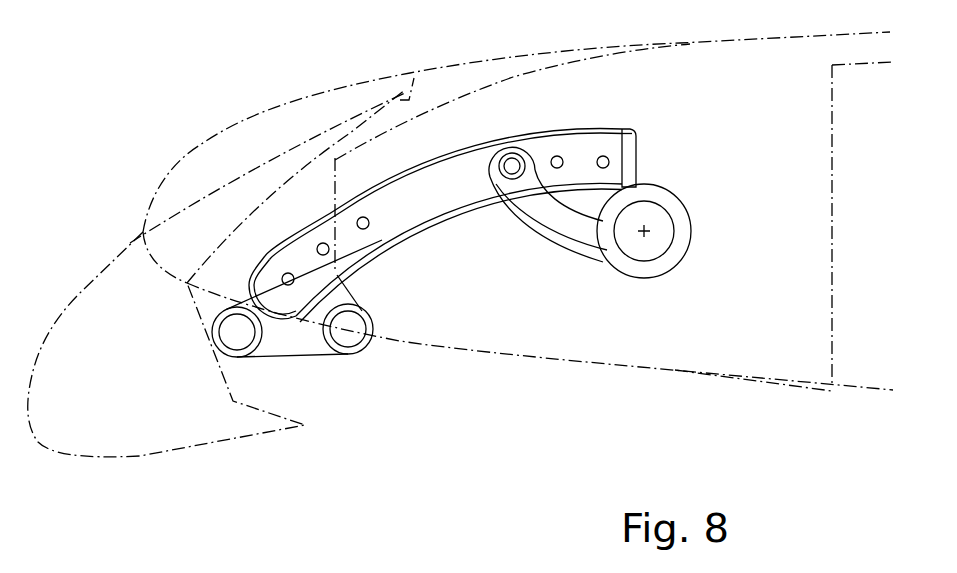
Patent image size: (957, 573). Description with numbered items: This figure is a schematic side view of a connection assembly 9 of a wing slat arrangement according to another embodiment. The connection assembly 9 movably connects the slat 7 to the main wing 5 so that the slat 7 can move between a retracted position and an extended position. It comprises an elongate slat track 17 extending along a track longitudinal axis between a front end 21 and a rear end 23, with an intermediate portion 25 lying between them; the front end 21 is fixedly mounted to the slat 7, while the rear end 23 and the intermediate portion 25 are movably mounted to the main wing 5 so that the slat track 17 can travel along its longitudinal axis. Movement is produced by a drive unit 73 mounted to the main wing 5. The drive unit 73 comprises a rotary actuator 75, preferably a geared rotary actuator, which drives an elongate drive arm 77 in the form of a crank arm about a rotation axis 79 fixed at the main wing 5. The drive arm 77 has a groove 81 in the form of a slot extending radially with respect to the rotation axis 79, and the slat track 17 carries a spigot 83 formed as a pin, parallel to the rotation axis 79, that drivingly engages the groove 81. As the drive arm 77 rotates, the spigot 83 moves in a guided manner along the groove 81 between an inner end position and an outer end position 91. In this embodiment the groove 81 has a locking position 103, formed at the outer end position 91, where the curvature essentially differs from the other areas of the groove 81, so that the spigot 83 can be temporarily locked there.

The main wing 5 is at (796, 101).
The slat 7 is at (108, 388).
The connection assembly 9 is at (366, 372).
The slat track 17 is at (403, 193).
The front end 21 is at (256, 270).
The rear end 23 is at (617, 150).
The intermediate portion 25 is at (421, 218).
The drive unit 73 is at (616, 245).
The rotary actuator 75 is at (680, 237).
The drive arm 77 is at (527, 243).
The rotation axis 79 is at (645, 237).
The groove 81 is at (490, 213).
The spigot 83 is at (512, 174).
The outer end position 91 is at (455, 165).
The locking position 103 is at (513, 157).